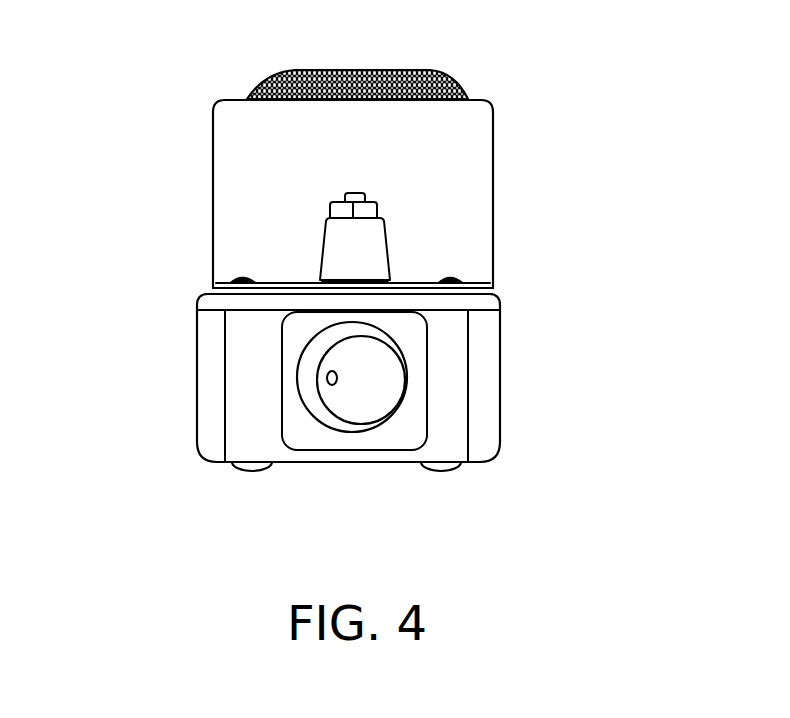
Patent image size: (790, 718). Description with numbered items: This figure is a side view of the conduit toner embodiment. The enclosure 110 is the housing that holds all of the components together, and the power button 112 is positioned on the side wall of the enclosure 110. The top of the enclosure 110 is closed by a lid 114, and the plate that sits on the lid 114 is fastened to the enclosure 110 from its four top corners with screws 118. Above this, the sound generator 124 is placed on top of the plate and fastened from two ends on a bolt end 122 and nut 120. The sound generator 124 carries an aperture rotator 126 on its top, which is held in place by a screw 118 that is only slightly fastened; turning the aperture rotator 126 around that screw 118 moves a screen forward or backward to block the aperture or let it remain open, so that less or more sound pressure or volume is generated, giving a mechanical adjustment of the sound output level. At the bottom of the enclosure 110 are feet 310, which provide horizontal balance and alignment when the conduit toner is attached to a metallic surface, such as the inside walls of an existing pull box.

The enclosure 110 is at (247, 360).
The power button 112 is at (355, 400).
The lid 114 is at (472, 303).
The screws 118 is at (216, 262).
The nut 120 is at (380, 216).
The bolt end 122 is at (365, 196).
The sound generator 124 is at (307, 175).
The aperture rotator 126 is at (273, 77).
The feet 310 is at (250, 470).